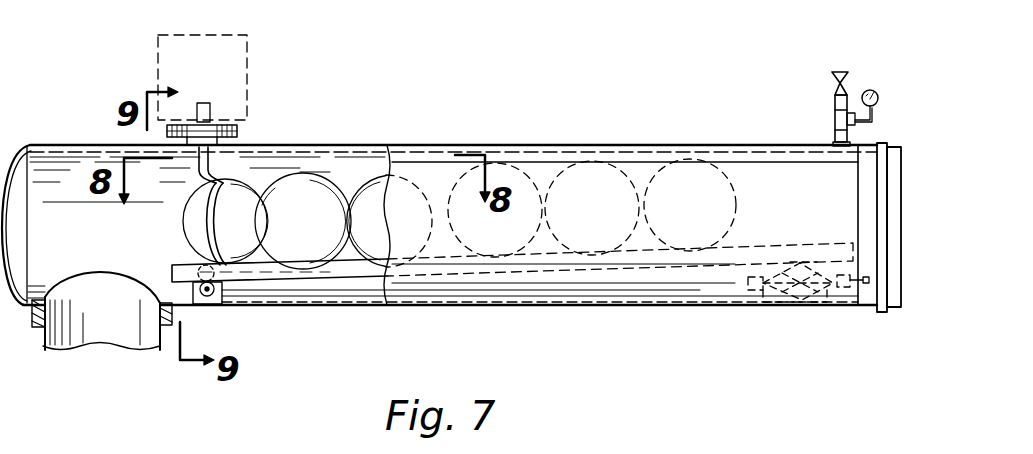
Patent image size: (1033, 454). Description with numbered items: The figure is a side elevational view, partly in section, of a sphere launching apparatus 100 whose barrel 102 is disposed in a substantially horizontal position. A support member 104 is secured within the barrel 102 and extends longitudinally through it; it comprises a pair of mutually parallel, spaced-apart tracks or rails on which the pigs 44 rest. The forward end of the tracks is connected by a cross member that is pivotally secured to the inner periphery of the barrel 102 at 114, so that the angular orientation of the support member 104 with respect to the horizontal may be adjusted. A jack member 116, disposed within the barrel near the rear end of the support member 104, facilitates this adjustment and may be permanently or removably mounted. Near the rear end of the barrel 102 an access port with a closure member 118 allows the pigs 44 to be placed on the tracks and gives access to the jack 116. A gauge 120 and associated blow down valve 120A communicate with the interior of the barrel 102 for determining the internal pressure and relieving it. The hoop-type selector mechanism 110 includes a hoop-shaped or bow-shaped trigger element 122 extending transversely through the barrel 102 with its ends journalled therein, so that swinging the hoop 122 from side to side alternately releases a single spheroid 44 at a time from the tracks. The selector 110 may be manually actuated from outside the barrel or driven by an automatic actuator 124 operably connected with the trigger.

The sphere launching apparatus 100 is at (577, 318).
The barrel 102 is at (622, 308).
The pig 44 is at (303, 190).
The trigger element 122 is at (224, 226).
The selector mechanism 110 is at (220, 176).
The automatic actuator 124 is at (232, 66).
The support member 104 is at (358, 278).
The pivotal securement 114 is at (214, 298).
The jack member 116 is at (820, 297).
The closure member 118 is at (893, 312).
The gauge 120 is at (868, 89).
The blow down valve 120A is at (834, 80).